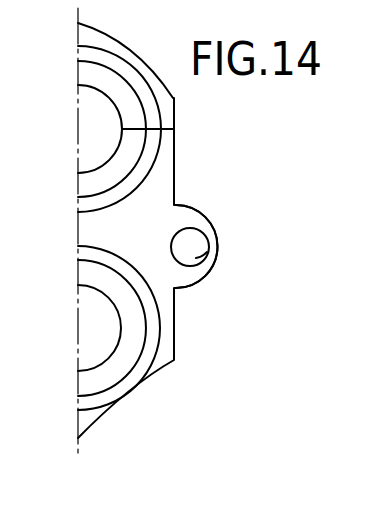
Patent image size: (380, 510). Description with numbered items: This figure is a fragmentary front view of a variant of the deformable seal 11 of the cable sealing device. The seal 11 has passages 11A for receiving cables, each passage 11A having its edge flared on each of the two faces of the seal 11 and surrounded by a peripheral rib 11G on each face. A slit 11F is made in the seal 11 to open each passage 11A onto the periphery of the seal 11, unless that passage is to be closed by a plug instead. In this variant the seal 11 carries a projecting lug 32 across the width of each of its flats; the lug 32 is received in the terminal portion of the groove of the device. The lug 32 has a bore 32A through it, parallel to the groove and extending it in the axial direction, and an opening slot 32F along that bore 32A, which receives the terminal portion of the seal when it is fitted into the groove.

The seal 11 is at (181, 336).
The passage 11A is at (108, 152).
The slit 11F is at (167, 131).
The peripheral rib 11G is at (153, 104).
The projecting lug 32 is at (205, 227).
The opening slot 32F is at (207, 251).
The bore 32A is at (196, 258).